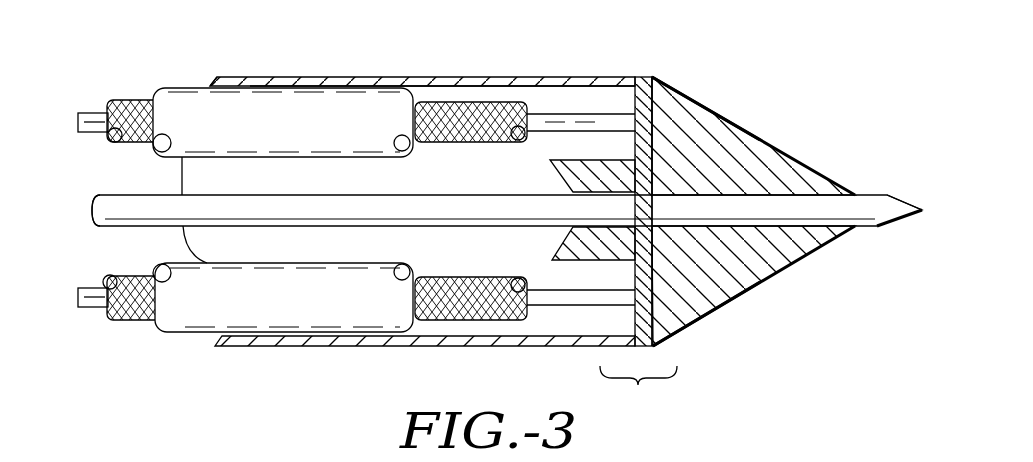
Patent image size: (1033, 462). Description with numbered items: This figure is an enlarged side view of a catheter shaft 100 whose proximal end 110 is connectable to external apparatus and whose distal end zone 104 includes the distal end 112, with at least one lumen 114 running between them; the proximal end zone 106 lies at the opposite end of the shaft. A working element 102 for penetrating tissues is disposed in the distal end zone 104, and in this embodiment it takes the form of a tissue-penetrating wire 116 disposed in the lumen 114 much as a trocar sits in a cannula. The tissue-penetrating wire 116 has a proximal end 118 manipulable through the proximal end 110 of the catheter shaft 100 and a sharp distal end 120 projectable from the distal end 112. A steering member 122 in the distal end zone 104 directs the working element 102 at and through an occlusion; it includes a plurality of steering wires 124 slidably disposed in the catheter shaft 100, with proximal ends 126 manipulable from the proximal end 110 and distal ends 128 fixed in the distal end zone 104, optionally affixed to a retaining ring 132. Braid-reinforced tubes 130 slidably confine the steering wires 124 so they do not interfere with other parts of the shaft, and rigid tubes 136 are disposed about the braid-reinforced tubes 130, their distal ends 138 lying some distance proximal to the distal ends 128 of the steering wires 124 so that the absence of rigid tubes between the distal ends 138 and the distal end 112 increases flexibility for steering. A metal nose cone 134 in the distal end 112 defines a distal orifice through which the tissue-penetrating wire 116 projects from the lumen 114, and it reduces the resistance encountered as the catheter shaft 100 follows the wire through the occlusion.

The catheter shaft 100 is at (555, 77).
The working element 102 is at (767, 207).
The distal end zone 104 is at (638, 391).
The proximal end zone 106 is at (260, 77).
The proximal end 110 is at (215, 77).
The distal end 112 is at (652, 77).
The lumen 114 is at (182, 178).
The tissue-penetrating wire 116 is at (168, 226).
The proximal end of tissue-penetrating wire 118 is at (93, 226).
The sharp distal end 120 is at (922, 212).
The steering member 122 is at (426, 102).
The steering wires 124 is at (545, 306).
The proximal ends of steering wires 126 is at (92, 307).
The distal ends of steering wires 128 is at (635, 112).
The braid-reinforced tubes 130 is at (484, 102).
The retaining ring 132 is at (653, 100).
The metal nose cone 134 is at (753, 288).
The rigid tubes 136 is at (308, 86).
The distal ends of rigid tubes 138 is at (410, 331).